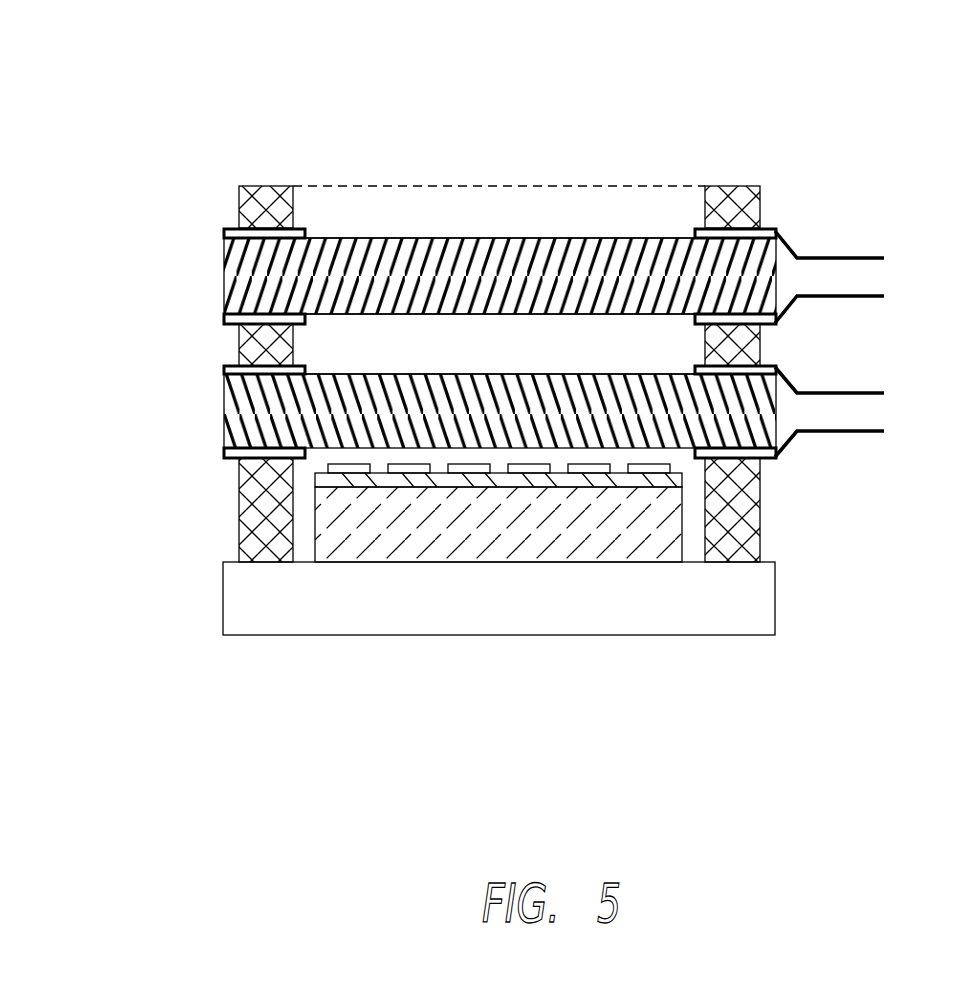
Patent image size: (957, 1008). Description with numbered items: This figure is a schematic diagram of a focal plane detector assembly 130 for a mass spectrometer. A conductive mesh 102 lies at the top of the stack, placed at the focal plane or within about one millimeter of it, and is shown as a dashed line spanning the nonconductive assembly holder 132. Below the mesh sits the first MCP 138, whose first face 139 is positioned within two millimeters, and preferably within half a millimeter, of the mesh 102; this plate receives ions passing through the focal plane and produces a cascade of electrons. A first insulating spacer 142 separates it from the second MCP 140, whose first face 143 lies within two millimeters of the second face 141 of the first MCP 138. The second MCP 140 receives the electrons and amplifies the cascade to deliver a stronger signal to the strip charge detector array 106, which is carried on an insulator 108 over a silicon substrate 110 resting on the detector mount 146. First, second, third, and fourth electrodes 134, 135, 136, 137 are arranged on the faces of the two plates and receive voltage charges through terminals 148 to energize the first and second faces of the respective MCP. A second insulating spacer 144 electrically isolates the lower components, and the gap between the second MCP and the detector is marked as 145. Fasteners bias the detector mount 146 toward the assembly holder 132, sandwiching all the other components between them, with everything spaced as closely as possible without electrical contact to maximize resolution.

The focal plane detector assembly 130 is at (213, 82).
The conductive mesh 102 is at (498, 186).
The assembly holder 132 is at (240, 192).
The first electrode 134 is at (297, 229).
The third electrode 136 is at (297, 365).
The first MCP 138 is at (223, 278).
The first face of the first MCP 139 is at (512, 238).
The second face of the first MCP 141 is at (392, 316).
The first insulating spacer 142 is at (240, 333).
The first face of the second MCP 143 is at (502, 373).
The second electrode 135 is at (697, 328).
The second MCP 140 is at (223, 413).
The fourth electrode 137 is at (233, 459).
The second insulating spacer 144 is at (254, 527).
The gap between plate and detector 145 is at (318, 452).
The detector mount 146 is at (242, 600).
The terminals 148 is at (852, 258).
The strip charge detector array 106 is at (653, 462).
The insulator 108 is at (643, 483).
The silicon substrate 110 is at (647, 533).